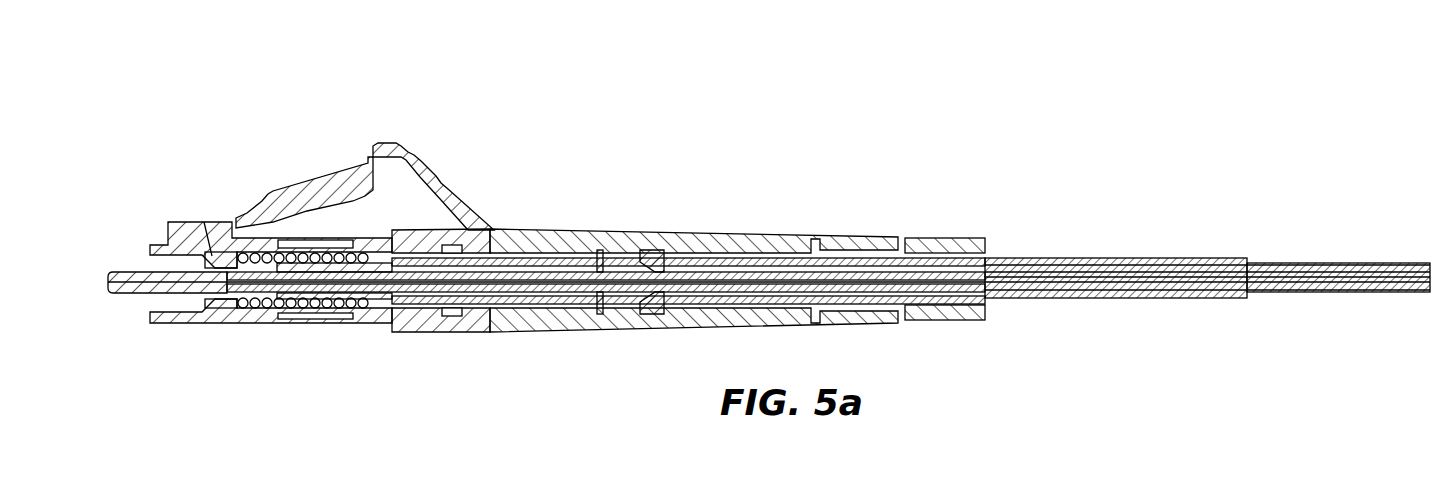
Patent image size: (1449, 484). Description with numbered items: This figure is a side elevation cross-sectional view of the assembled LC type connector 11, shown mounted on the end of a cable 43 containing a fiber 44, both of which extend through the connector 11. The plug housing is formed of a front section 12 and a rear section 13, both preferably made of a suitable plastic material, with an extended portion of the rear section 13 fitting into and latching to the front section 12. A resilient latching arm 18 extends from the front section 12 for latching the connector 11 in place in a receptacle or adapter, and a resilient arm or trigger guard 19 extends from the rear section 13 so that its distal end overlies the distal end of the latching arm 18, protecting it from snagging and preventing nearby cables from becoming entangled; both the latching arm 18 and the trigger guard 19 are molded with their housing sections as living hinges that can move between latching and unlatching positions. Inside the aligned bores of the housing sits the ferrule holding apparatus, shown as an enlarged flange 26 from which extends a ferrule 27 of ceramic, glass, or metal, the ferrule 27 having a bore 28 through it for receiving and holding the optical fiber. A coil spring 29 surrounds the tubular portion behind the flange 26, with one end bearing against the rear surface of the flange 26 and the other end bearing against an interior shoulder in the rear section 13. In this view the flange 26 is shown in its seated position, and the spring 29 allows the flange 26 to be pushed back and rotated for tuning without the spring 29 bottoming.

The LC type connector 11 is at (679, 150).
The front section 12 is at (152, 244).
The rear section 13 is at (412, 333).
The resilient latching arm 18 is at (328, 176).
The trigger guard 19 is at (428, 160).
The flange 26 is at (209, 256).
The ferrule 27 is at (131, 296).
The bore 28 is at (104, 284).
The coil spring 29 is at (263, 305).
The cable 43 is at (1367, 260).
The fiber 44 is at (340, 294).